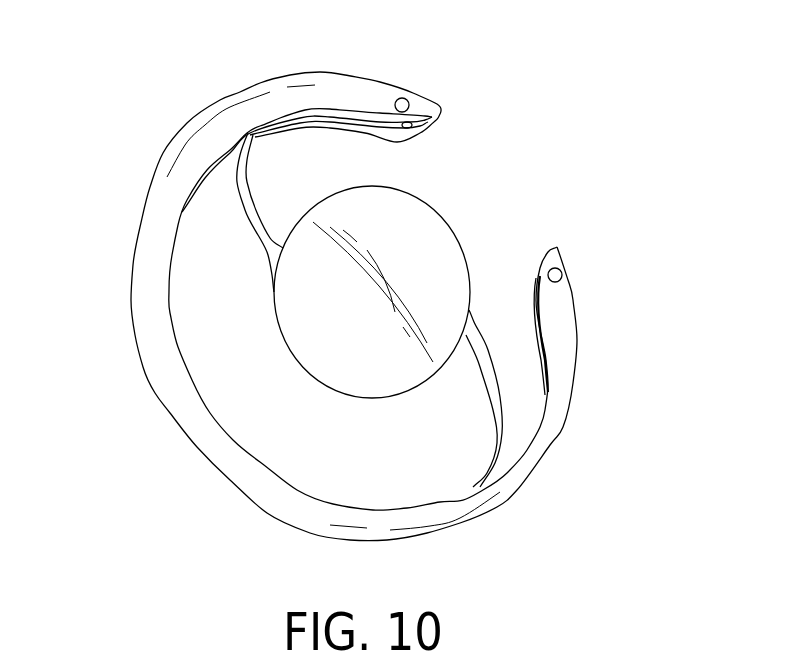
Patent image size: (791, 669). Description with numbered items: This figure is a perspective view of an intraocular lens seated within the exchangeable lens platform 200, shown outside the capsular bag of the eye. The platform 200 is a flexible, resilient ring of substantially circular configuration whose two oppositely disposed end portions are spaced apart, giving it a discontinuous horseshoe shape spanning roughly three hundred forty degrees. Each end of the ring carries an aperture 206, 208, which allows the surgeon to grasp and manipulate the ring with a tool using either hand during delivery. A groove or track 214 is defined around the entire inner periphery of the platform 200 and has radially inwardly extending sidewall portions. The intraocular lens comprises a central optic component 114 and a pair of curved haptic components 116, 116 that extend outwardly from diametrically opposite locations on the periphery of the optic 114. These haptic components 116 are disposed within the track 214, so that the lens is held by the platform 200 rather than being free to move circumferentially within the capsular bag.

The exchangeable lens platform 200 is at (190, 402).
The aperture 206 is at (405, 99).
The aperture 208 is at (562, 270).
The groove or track 214 is at (354, 120).
The haptic component 116 is at (242, 217).
The central optic component 114 is at (362, 365).